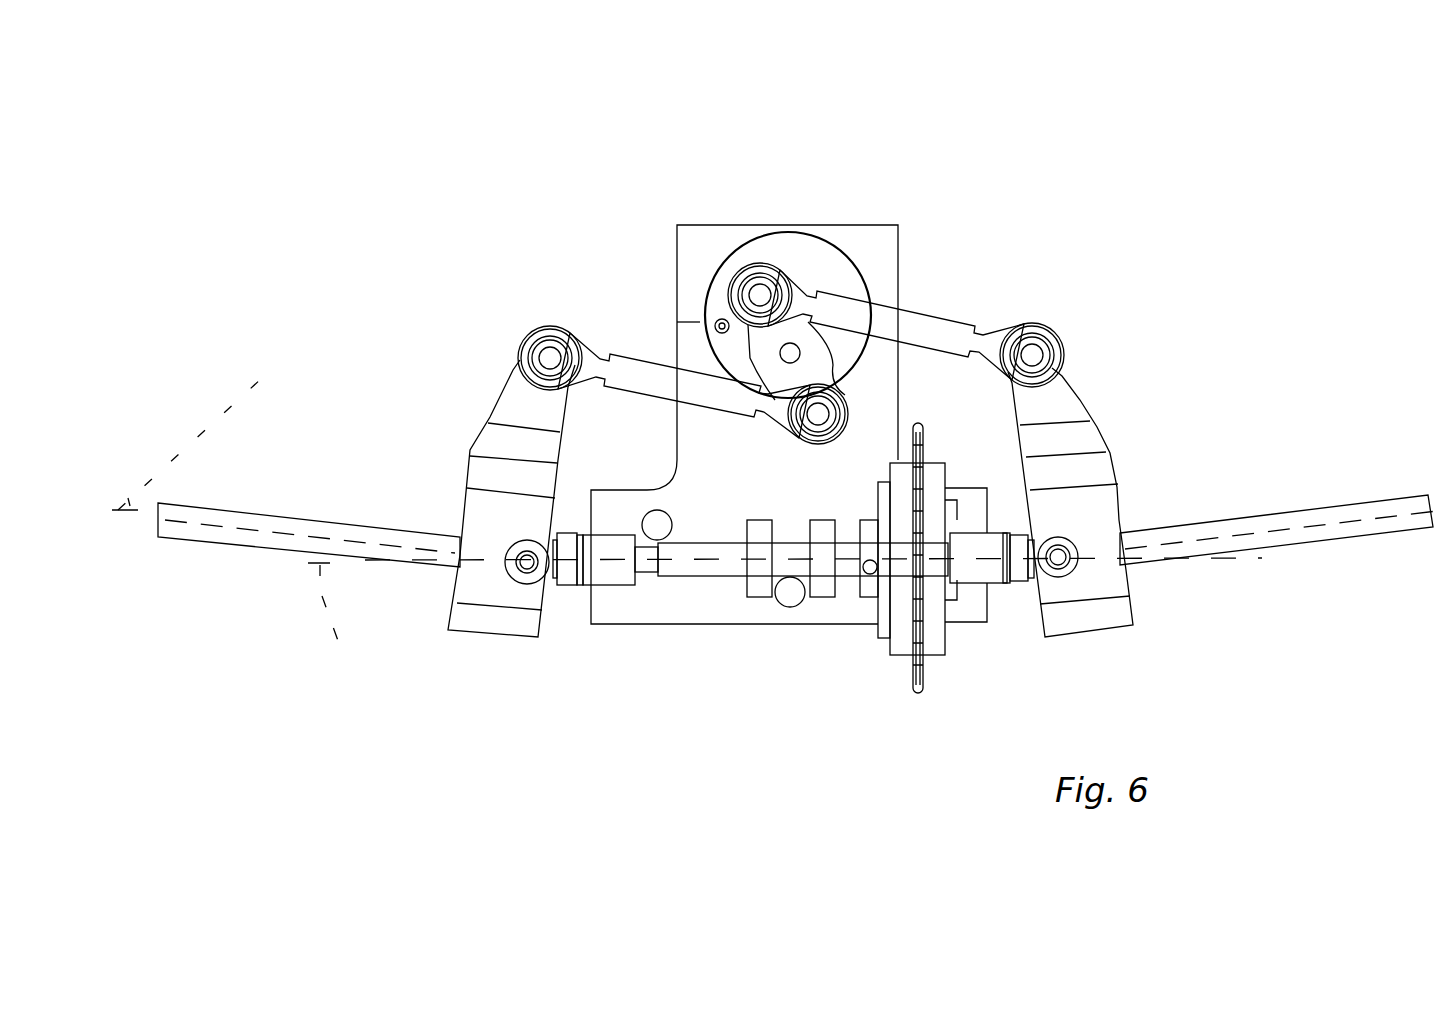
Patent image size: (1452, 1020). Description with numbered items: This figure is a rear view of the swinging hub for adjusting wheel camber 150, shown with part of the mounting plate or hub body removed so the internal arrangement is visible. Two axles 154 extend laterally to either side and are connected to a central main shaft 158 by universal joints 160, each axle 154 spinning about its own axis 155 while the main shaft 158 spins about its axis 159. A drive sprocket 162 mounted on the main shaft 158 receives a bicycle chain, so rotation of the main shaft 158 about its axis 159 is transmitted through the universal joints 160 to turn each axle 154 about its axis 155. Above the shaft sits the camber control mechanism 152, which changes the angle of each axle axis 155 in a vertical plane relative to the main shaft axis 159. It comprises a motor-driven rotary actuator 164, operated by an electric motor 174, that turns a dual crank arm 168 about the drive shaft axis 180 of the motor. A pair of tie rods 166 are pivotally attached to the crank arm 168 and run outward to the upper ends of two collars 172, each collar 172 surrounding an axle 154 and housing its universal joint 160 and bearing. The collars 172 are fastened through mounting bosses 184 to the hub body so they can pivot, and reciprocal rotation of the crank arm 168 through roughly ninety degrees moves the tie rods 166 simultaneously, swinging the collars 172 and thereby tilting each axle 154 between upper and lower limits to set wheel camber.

The swinging hub for adjusting wheel camber 150 is at (1057, 132).
The camber control mechanism 152 is at (1072, 312).
The axle 154 is at (258, 528).
The axle axis 155 is at (187, 444).
The main shaft 158 is at (720, 570).
The main shaft axis 159 is at (351, 628).
The universal joint 160 is at (565, 582).
The drive sprocket 162 is at (925, 684).
The rotary actuator 164 is at (750, 240).
The tie rod 166 is at (636, 390).
The dual crank arm 168 is at (762, 352).
The collar 172 is at (452, 600).
The electric motor 174 is at (832, 262).
The drive shaft axis 180 is at (797, 348).
The mounting boss 184 is at (527, 580).